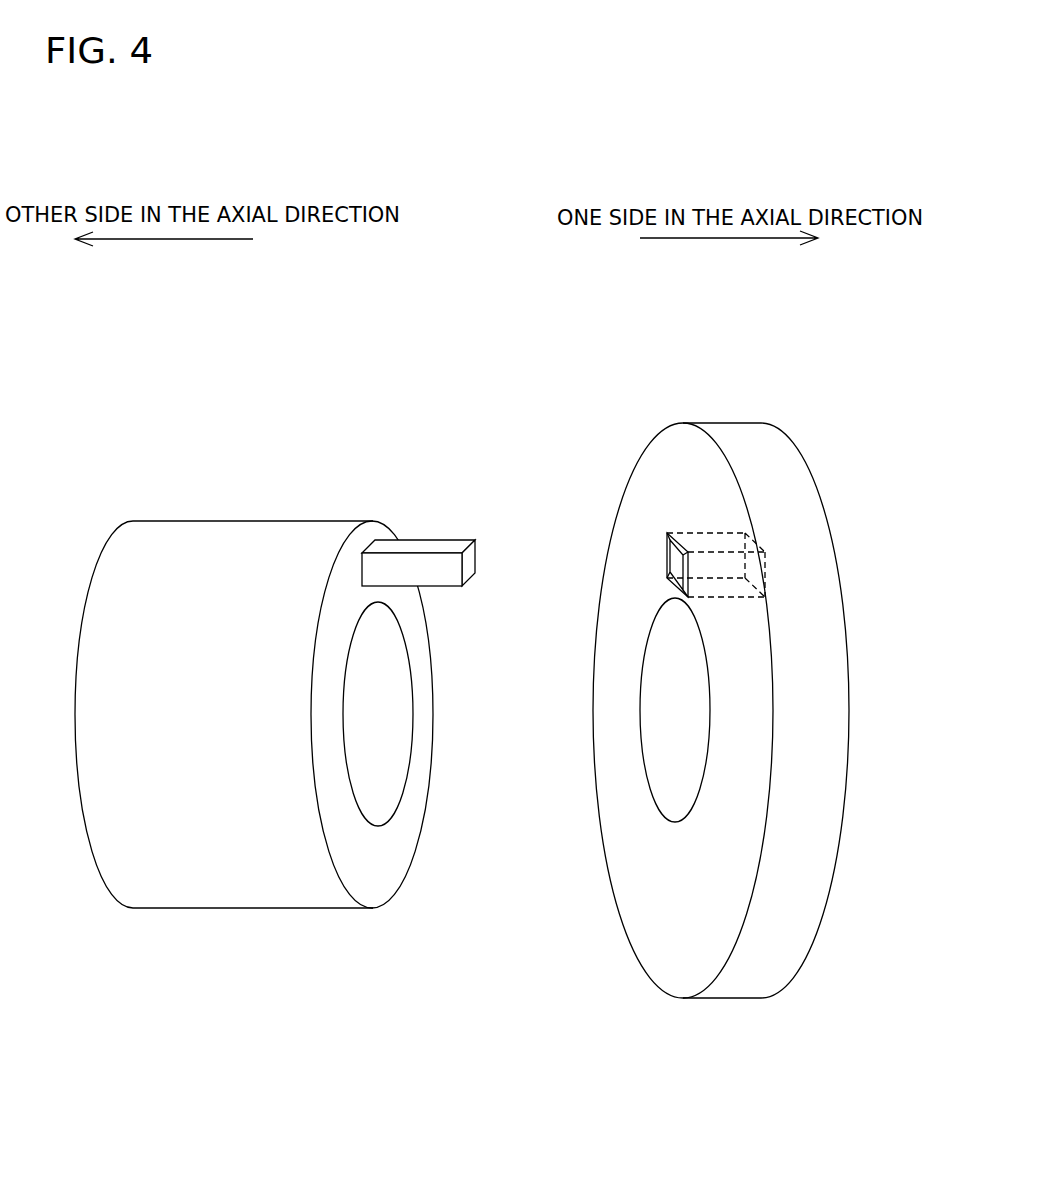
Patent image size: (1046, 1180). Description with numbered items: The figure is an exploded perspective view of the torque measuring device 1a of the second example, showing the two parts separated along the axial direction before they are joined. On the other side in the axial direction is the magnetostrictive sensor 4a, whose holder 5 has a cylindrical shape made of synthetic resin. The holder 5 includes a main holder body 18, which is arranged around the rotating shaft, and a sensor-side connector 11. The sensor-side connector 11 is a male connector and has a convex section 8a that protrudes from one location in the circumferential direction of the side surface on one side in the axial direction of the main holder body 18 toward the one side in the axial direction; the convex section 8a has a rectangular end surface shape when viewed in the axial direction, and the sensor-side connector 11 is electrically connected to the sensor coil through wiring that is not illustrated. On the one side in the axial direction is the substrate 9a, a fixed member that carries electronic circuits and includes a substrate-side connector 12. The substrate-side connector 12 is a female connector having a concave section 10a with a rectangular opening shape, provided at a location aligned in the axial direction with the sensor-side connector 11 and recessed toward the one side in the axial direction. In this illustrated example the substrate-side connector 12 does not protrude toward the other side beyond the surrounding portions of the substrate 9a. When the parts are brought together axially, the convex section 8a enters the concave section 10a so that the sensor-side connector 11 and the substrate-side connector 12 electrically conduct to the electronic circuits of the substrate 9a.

The torque measuring device 1a is at (478, 366).
The magnetostrictive sensor 4a is at (167, 509).
The holder 5 is at (238, 545).
The convex section 8a is at (440, 567).
The substrate 9a is at (746, 412).
The concave section 10a is at (667, 555).
The sensor-side connector 11 is at (413, 568).
The substrate-side connector 12 is at (667, 577).
The main holder body 18 is at (285, 900).